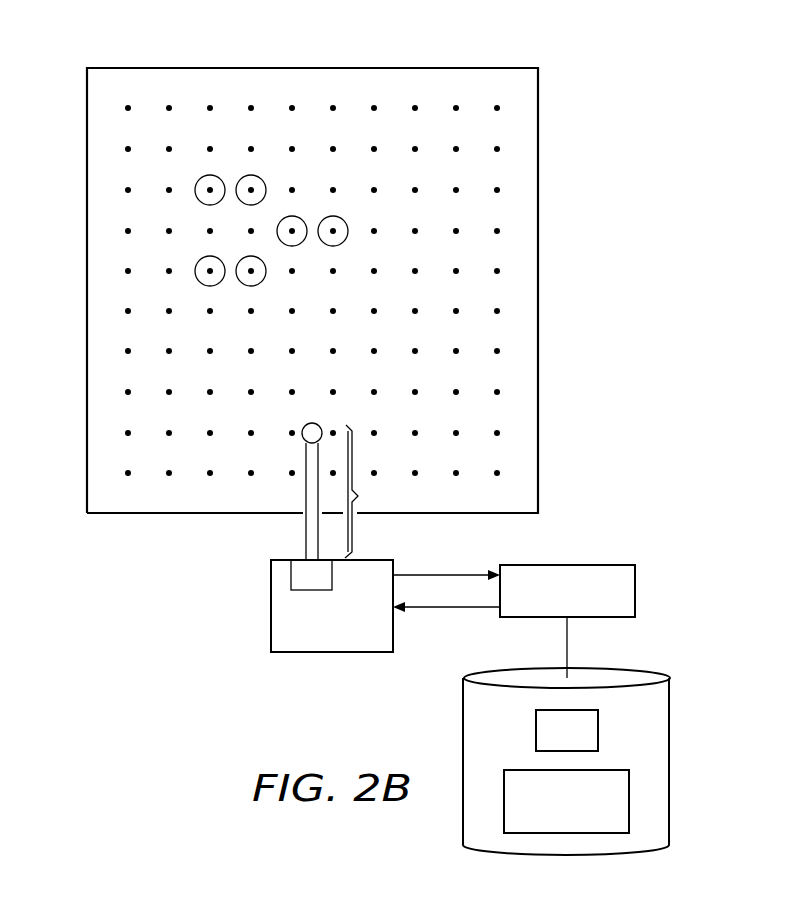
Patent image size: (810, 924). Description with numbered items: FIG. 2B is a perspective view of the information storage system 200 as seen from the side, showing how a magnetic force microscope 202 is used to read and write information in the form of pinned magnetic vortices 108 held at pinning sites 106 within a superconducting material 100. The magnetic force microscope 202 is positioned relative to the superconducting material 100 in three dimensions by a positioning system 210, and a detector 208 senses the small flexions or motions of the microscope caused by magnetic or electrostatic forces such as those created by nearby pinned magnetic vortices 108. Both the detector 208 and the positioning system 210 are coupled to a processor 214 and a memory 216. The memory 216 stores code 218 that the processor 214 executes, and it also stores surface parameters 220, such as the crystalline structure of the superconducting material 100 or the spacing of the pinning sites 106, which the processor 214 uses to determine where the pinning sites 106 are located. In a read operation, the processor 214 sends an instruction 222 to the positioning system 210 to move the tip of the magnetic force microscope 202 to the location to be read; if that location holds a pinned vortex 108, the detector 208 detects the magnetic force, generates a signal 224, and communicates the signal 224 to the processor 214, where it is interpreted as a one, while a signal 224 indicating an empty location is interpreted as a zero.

The superconducting material 100 is at (538, 333).
The pinning sites 106 is at (415, 105).
The pinned magnetic vortices 108 is at (255, 176).
The information storage system 200 is at (150, 686).
The magnetic force microscope 202 is at (351, 491).
The detector 208 is at (318, 592).
The positioning system 210 is at (270, 598).
The processor 214 is at (567, 565).
The memory 216 is at (669, 760).
The code 218 is at (598, 731).
The surface parameters 220 is at (520, 770).
The instruction 222 is at (445, 612).
The signal 224 is at (443, 573).